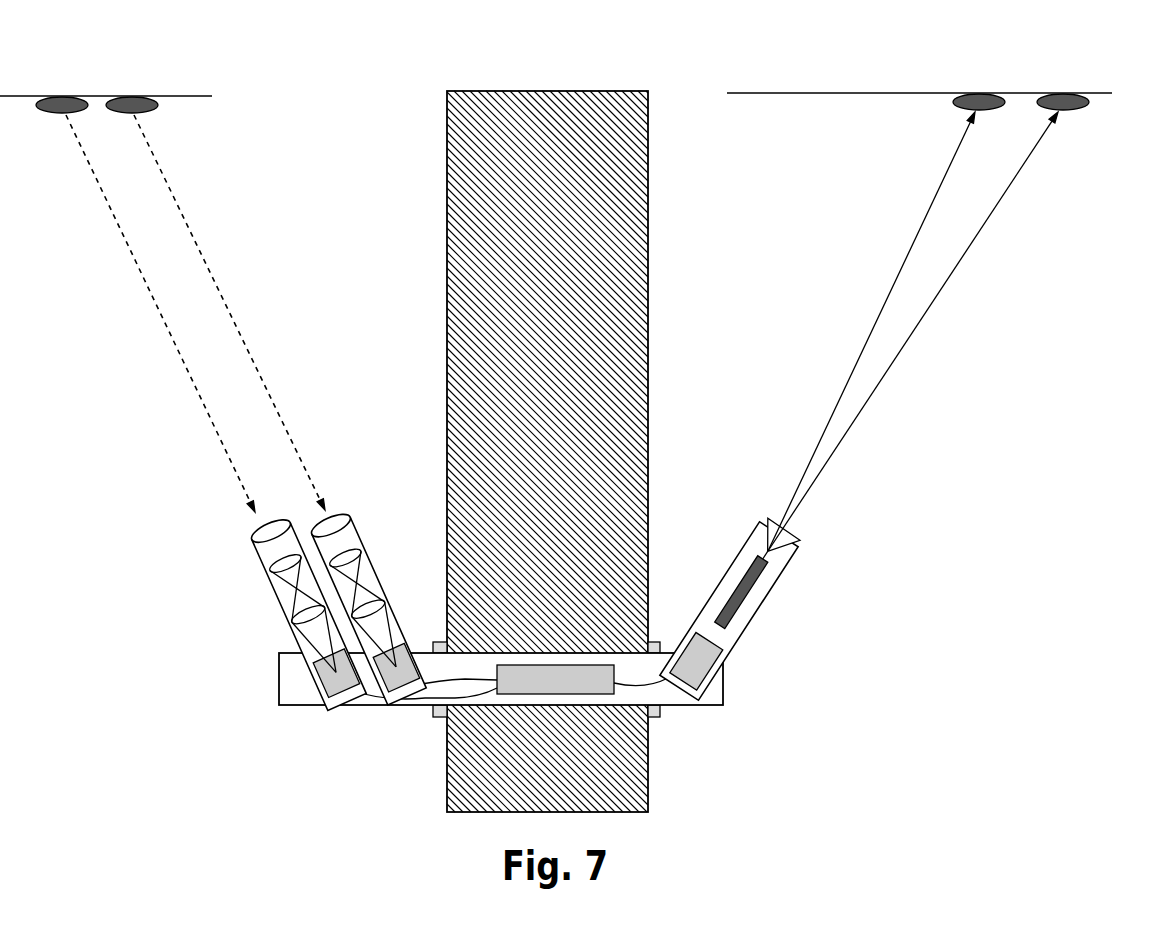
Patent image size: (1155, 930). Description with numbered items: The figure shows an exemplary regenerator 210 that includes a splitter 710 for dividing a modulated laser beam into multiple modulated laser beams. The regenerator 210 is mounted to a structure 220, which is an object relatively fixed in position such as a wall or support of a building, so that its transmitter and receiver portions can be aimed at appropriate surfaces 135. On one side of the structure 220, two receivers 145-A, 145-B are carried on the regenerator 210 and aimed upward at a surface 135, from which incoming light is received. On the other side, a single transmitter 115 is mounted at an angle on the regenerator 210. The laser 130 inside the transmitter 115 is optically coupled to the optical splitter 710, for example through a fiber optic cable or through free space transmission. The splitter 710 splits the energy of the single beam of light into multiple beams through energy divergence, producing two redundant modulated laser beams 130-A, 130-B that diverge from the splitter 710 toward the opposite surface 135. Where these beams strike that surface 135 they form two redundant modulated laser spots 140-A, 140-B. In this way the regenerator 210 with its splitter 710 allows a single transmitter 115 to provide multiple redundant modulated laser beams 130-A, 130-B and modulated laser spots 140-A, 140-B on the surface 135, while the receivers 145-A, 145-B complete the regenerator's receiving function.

The surface 135 is at (170, 96).
The structure 220 is at (586, 91).
The regenerator 210 is at (246, 650).
The receiver 145-A is at (306, 729).
The receiver 145-B is at (386, 735).
The transmitter 115 is at (772, 642).
The modulated laser beam 130 is at (768, 596).
The splitter 710 is at (816, 546).
The modulated laser beam 130-A is at (824, 348).
The modulated laser beam 130-B is at (911, 377).
The modulated laser spot 140-A is at (932, 120).
The modulated laser spot 140-B is at (1078, 131).